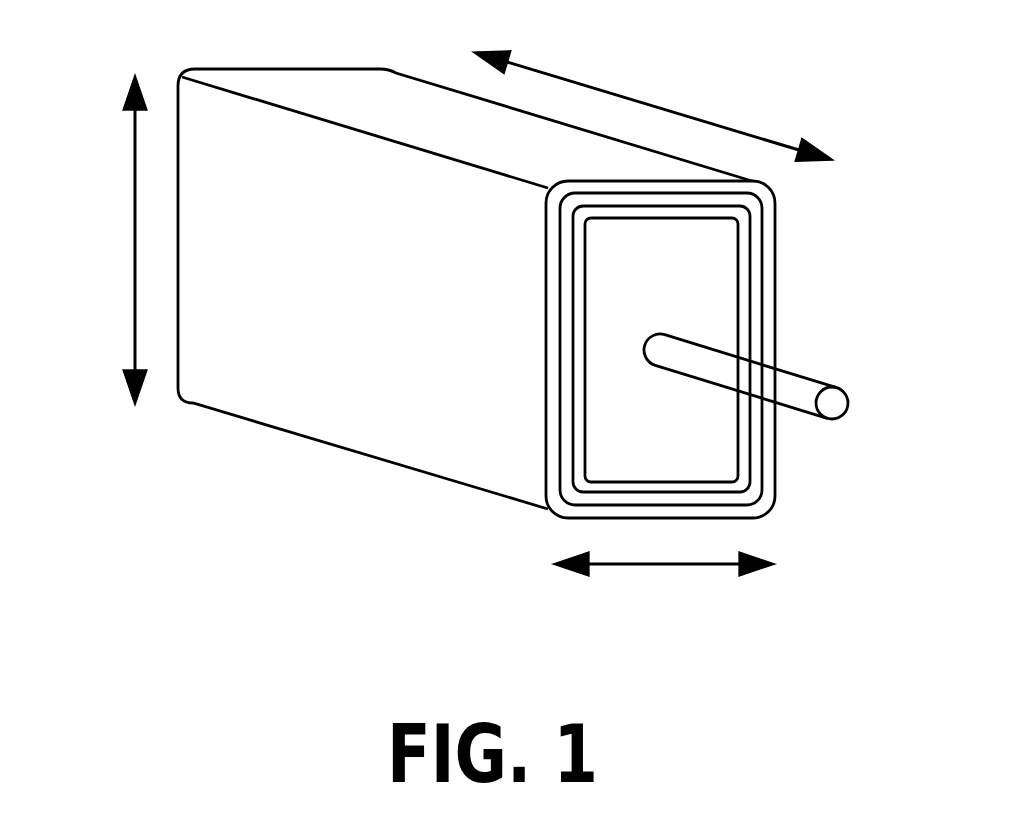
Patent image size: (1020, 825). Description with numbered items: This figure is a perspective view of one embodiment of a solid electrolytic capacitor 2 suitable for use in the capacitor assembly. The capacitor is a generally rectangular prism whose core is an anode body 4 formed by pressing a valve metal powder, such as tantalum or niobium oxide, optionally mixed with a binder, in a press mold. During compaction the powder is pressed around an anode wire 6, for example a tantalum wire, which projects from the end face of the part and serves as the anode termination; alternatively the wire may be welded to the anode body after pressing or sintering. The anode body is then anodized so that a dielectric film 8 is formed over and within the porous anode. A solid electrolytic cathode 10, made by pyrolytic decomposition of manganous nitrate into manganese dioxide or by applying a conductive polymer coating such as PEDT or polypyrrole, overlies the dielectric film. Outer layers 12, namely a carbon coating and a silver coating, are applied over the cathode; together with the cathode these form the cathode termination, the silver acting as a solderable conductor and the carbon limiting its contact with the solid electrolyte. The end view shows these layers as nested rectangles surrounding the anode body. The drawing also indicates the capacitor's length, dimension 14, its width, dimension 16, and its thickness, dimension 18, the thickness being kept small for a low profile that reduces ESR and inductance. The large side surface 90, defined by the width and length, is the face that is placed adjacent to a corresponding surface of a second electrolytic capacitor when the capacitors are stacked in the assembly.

The electrolytic capacitor 2 is at (185, 505).
The anode body 4 is at (710, 288).
The anode wire 6 is at (833, 405).
The dielectric film 8 is at (738, 472).
The solid electrolytic cathode 10 is at (753, 338).
The layers 12 is at (768, 223).
The length dimension 14 is at (668, 108).
The width dimension 16 is at (133, 242).
The thickness dimension 18 is at (677, 566).
The surface 90 is at (440, 415).